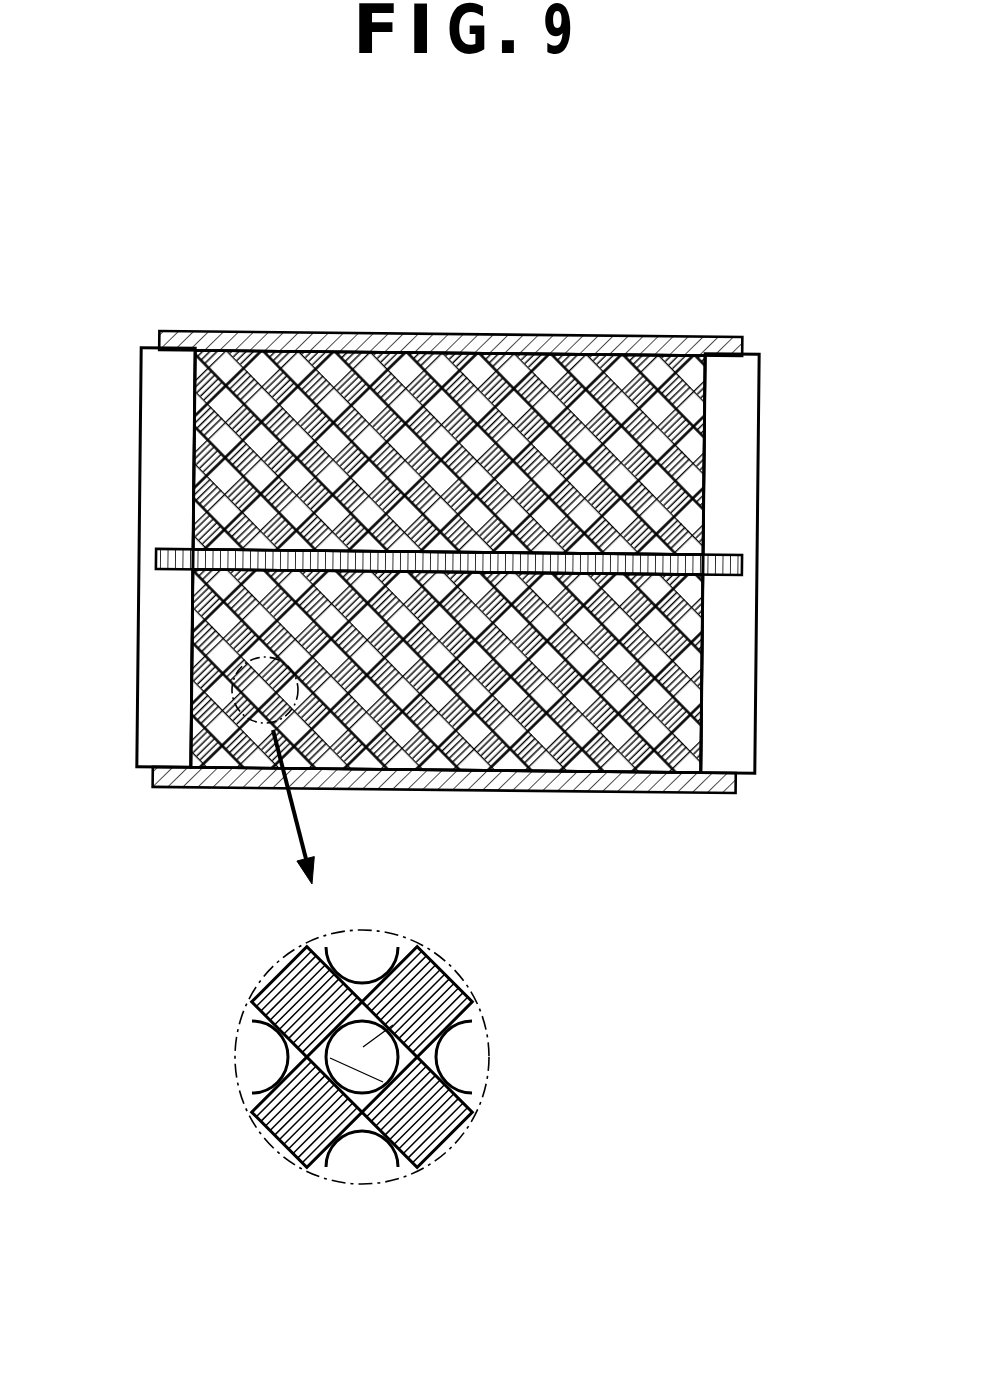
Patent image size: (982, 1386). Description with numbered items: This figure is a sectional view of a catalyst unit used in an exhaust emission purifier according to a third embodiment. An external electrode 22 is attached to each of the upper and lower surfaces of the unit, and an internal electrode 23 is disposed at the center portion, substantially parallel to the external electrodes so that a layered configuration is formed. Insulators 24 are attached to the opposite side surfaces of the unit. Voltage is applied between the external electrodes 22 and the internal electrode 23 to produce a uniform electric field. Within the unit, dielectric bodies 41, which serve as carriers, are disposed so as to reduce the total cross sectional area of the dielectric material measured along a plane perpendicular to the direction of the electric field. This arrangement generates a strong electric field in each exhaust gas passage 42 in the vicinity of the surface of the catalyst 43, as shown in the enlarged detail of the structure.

The external electrode 22 is at (322, 333).
The internal electrode 23 is at (738, 561).
The insulator 24 is at (157, 458).
The dielectric body 41 is at (612, 388).
The exhaust gas passage 42 is at (563, 400).
The catalyst 43 is at (445, 1146).